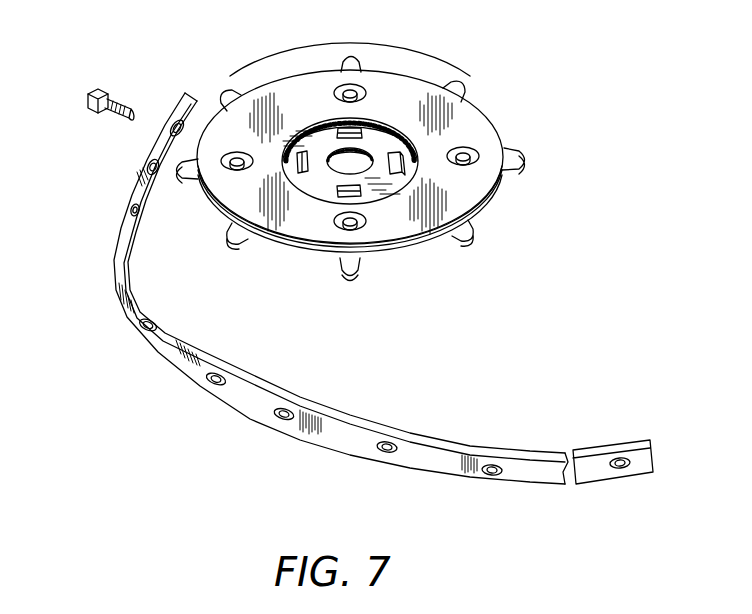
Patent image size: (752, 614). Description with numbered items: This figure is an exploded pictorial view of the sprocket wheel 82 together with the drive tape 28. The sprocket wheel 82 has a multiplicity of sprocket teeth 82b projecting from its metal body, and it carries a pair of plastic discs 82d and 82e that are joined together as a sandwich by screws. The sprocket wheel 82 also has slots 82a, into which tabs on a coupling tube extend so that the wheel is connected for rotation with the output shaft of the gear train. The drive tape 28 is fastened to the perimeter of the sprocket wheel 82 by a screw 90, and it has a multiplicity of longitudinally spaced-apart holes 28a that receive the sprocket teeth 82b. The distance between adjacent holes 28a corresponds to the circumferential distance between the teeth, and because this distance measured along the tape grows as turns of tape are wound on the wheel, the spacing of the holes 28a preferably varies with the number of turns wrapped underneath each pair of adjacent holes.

The sprocket wheel 82 is at (380, 174).
The slots 82a is at (351, 133).
The sprocket teeth 82b is at (345, 282).
The plastic disc 82d is at (288, 252).
The plastic disc 82e is at (303, 88).
The drive tape 28 is at (253, 374).
The holes 28a is at (378, 451).
The screw 90 is at (92, 119).